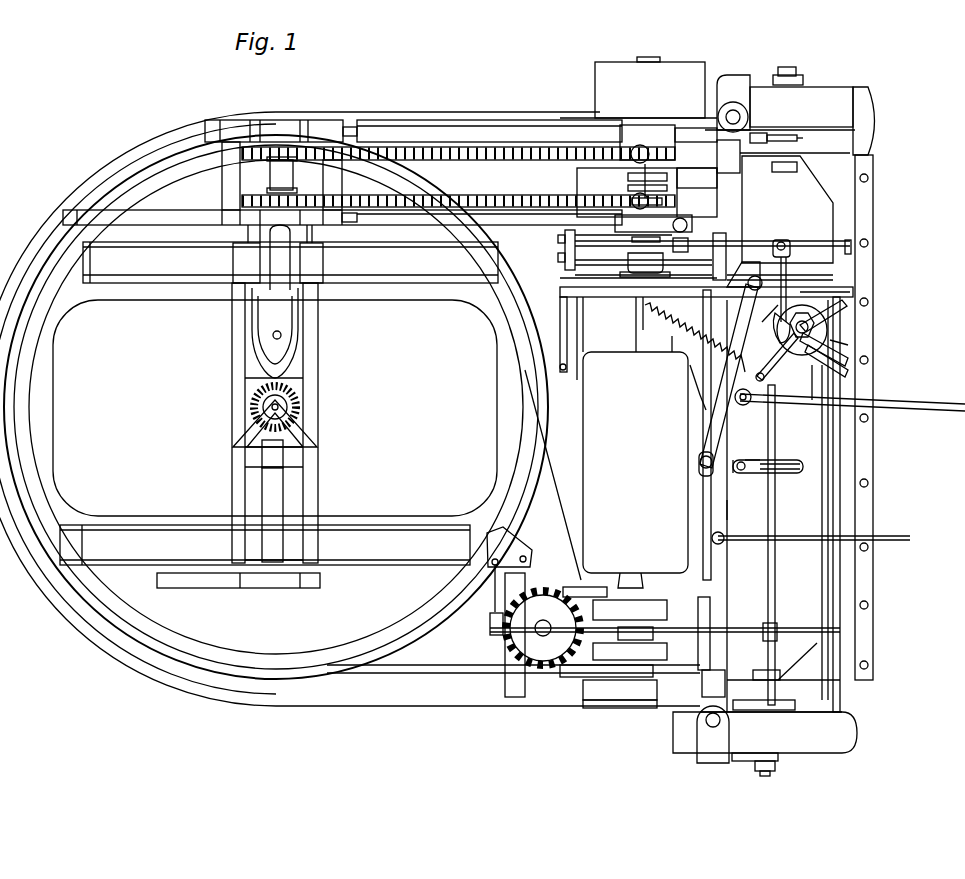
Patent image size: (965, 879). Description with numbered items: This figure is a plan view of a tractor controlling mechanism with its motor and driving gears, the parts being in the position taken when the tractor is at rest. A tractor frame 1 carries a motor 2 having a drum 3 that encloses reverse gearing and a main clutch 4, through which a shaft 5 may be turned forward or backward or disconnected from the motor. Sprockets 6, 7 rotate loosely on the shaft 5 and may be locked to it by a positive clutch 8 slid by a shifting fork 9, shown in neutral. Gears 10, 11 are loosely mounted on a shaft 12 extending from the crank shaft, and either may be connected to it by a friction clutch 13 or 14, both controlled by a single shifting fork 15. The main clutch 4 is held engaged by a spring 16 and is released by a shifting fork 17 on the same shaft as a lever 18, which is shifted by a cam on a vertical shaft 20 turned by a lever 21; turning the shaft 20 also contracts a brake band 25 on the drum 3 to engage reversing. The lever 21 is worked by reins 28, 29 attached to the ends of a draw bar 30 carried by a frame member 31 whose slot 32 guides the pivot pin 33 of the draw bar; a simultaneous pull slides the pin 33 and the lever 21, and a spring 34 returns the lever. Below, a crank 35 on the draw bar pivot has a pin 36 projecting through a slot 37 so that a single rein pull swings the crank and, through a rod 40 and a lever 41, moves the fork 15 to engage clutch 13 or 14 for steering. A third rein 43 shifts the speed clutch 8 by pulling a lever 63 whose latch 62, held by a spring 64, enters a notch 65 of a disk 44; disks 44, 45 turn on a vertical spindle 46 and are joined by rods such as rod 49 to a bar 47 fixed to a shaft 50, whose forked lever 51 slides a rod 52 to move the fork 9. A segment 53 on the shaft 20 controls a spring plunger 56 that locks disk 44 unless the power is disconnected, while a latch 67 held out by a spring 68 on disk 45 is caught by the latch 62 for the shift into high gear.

The tractor frame 1 is at (538, 704).
The motor 2 is at (635, 462).
The drum 3 is at (672, 350).
The main clutch 4 is at (562, 274).
The shaft 5 is at (650, 57).
The sprocket 6 is at (657, 203).
The sprocket 7 is at (623, 156).
The positive clutch 8 is at (628, 184).
The shifting fork 9 is at (662, 181).
The gear 10 is at (653, 670).
The gear 11 is at (655, 590).
The shaft 12 is at (630, 588).
The friction clutch 13 is at (667, 654).
The friction clutch 14 is at (667, 610).
The shifting fork 15 is at (630, 708).
The spring 16 is at (627, 237).
The shifting fork 17 is at (640, 262).
The lever 18 is at (735, 262).
The vertical shaft 20 is at (796, 277).
The lever 21 is at (748, 328).
The brake band 25 is at (640, 334).
The rein 28 is at (800, 540).
The rein 29 is at (819, 380).
The draw bar 30 is at (728, 514).
The frame member 31 is at (757, 458).
The slot 32 is at (796, 460).
The pivot pin 33 is at (704, 476).
The spring 34 is at (693, 384).
The crank 35 is at (744, 454).
The pin 36 is at (742, 471).
The slot 37 is at (781, 460).
The rod 40 is at (768, 572).
The lever 41 is at (766, 624).
The rein 43 is at (897, 410).
The disk 44 is at (840, 350).
The disk 45 is at (828, 330).
The vertical spindle 46 is at (845, 318).
The bar 47 is at (783, 240).
The rod 49 is at (790, 258).
The shaft 50 is at (822, 246).
The forked lever 51 is at (688, 240).
The rod 52 is at (680, 212).
The segment 53 is at (818, 290).
The spring plunger 56 is at (769, 332).
The latch 62 is at (815, 375).
The lever 63 is at (778, 358).
The spring 64 is at (694, 402).
The notch 65 is at (840, 500).
The latch 67 is at (835, 378).
The spring 68 is at (840, 358).